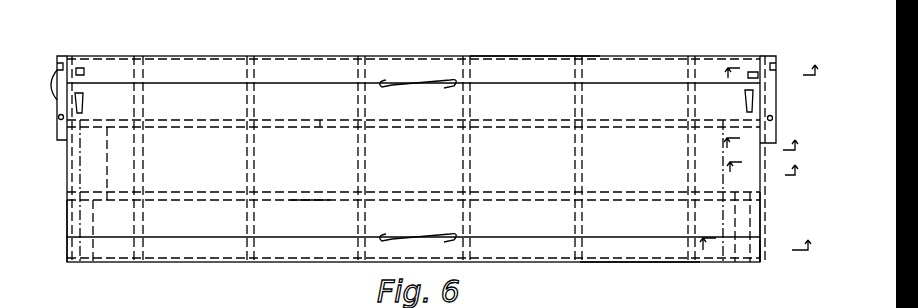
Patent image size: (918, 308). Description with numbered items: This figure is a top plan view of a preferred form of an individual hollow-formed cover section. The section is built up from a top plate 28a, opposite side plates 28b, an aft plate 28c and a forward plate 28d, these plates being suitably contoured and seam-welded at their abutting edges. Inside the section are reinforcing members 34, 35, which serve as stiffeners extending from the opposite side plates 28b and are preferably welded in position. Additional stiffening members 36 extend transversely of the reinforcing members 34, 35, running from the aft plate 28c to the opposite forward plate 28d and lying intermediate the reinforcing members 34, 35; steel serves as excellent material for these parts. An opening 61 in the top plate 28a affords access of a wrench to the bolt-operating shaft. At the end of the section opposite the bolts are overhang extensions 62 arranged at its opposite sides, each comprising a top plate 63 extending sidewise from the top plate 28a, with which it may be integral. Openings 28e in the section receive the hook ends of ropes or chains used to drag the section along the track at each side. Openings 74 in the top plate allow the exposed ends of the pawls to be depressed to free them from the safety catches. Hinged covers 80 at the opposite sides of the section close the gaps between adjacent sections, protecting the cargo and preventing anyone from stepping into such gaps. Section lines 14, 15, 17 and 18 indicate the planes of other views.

The section line 14 is at (759, 231).
The section line 15 is at (777, 160).
The section line 17 is at (765, 63).
The section line 18 is at (762, 142).
The top plate 28a is at (500, 232).
The side plates 28b is at (780, 189).
The aft plate 28c is at (640, 263).
The forward plate 28d is at (550, 57).
The openings 28e is at (766, 120).
The reinforcing member 34 is at (322, 130).
The reinforcing member 35 is at (302, 202).
The stiffening members 36 is at (365, 172).
The opening 61 is at (83, 100).
The overhang extensions 62 is at (51, 103).
The top plate 63 is at (52, 78).
The openings 74 is at (84, 70).
The hinged covers 80 is at (762, 256).